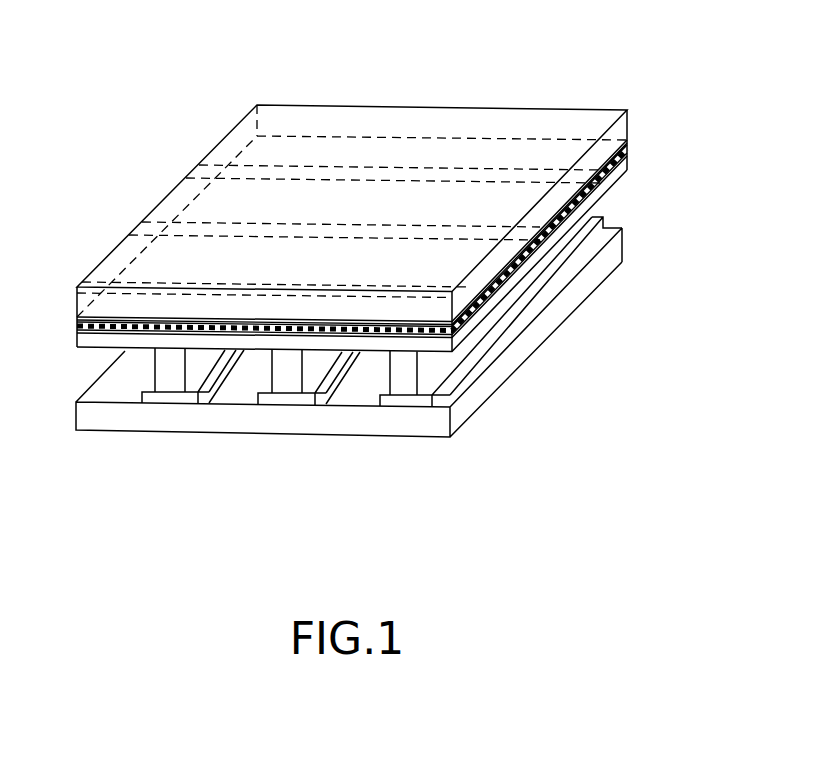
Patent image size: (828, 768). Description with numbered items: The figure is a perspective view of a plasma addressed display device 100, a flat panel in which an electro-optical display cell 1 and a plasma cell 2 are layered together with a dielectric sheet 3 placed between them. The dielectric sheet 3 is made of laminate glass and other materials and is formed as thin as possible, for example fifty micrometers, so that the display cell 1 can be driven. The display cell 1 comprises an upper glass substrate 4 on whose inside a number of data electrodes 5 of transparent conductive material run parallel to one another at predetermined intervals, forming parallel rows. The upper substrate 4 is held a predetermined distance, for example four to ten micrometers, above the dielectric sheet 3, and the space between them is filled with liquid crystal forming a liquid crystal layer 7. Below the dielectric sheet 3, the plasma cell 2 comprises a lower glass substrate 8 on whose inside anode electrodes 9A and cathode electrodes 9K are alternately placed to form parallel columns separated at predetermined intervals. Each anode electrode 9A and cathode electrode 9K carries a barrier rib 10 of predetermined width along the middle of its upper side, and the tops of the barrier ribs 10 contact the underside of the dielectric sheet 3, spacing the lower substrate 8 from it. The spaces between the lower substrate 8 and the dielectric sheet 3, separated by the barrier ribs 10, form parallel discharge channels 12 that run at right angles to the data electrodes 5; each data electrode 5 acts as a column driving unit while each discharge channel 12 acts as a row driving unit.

The plasma addressed display device 100 is at (289, 26).
The electro-optical display cell 1 is at (643, 123).
The plasma cell 2 is at (630, 246).
The dielectric sheet 3 is at (627, 168).
The upper glass substrate 4 is at (304, 116).
The data electrodes 5 is at (608, 158).
The liquid crystal layer 7 is at (628, 152).
The lower glass substrate 8 is at (503, 371).
The anode electrodes 9A is at (165, 398).
The cathode electrodes 9K is at (283, 402).
The barrier rib 10 is at (156, 374).
The discharge channels 12 is at (233, 388).